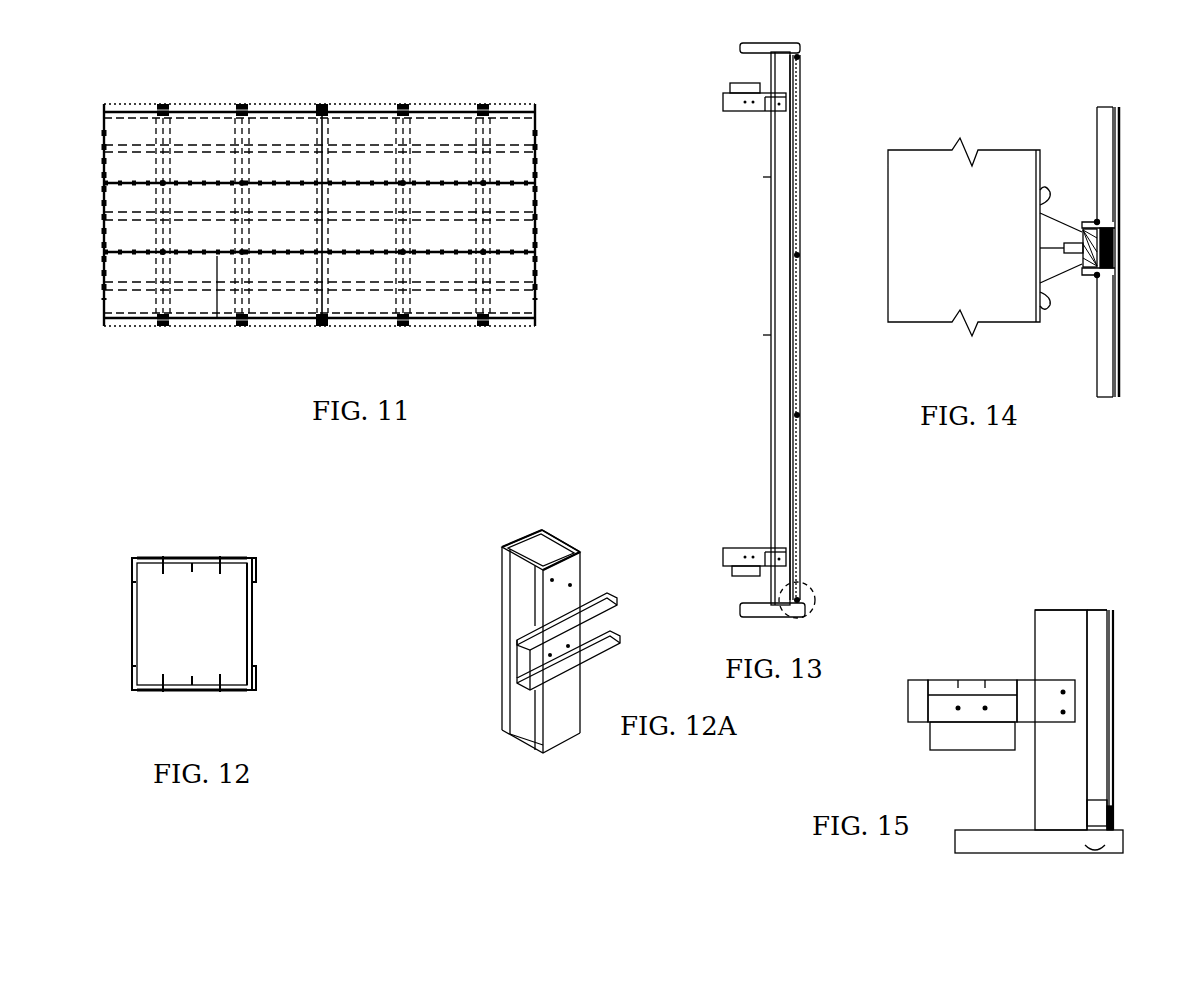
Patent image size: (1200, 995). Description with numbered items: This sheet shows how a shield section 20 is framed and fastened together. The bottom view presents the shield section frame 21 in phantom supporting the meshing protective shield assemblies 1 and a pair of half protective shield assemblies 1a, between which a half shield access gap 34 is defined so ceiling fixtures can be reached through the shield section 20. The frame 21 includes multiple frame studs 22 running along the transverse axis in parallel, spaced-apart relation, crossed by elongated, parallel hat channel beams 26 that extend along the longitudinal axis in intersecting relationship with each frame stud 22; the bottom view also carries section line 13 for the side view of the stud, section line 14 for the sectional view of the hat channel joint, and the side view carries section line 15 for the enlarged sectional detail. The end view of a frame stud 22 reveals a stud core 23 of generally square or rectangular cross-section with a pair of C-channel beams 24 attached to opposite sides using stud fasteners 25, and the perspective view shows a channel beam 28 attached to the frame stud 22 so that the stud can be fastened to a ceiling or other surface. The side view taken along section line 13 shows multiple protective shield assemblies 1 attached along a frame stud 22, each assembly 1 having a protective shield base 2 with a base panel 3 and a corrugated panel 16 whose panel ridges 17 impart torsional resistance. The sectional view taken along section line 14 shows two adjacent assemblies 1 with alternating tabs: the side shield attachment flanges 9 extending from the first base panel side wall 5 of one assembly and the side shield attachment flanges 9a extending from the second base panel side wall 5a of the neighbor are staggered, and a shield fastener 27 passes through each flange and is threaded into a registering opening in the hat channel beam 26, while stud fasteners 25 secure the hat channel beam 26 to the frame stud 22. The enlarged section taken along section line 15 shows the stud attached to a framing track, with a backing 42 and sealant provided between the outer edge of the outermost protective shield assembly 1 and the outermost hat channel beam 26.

In FIG. 11, the protective shield assembly 1 is at (100, 158).
In FIG. 13, the protective shield assembly 1 is at (811, 130).
In FIG. 14, the protective shield assembly 1 is at (1090, 120).
In FIG. 15, the protective shield assembly 1 is at (1090, 604).
In FIG. 11, the half protective shield assembly 1a is at (263, 328).
In FIG. 13, the protective shield base 2 is at (800, 173).
In FIG. 14, the protective shield base 2 is at (1105, 110).
In FIG. 15, the protective shield base 2 is at (1106, 620).
In FIG. 13, the base panel 3 is at (800, 112).
In FIG. 14, the base panel 3 is at (1112, 110).
In FIG. 15, the base panel 3 is at (1113, 615).
In FIG. 14, the first base panel side wall 5 is at (1098, 270).
In FIG. 14, the second base panel side wall 5a is at (1103, 228).
In FIG. 14, the side shield attachment flange 9 is at (1088, 275).
In FIG. 14, the side shield attachment flange 9a is at (1082, 226).
In FIG. 11, the section line 13 is at (398, 76).
In FIG. 11, the section line 14 is at (281, 155).
In FIG. 13, the section line 15 is at (805, 618).
In FIG. 14, the corrugated panel 16 is at (1093, 143).
In FIG. 15, the corrugated panel 16 is at (1080, 625).
In FIG. 14, the panel ridge 17 is at (1100, 130).
In FIG. 15, the panel ridge 17 is at (1100, 648).
In FIG. 11, the shield section 20 is at (156, 82).
In FIG. 11, the shield section frame 21 is at (544, 136).
In FIG. 13, the shield section frame 21 is at (760, 228).
In FIG. 15, the shield section frame 21 is at (1035, 603).
In FIG. 11, the frame stud 22 is at (410, 100).
In FIG. 12, the frame stud 22 is at (258, 603).
In FIG. 12A, the frame stud 22 is at (500, 612).
In FIG. 13, the frame stud 22 is at (769, 255).
In FIG. 14, the frame stud 22 is at (920, 146).
In FIG. 15, the frame stud 22 is at (1033, 640).
In FIG. 12, the stud core 23 is at (253, 645).
In FIG. 12A, the stud core 23 is at (556, 546).
In FIG. 12, the C-channel beam 24 is at (242, 556).
In FIG. 12A, the C-channel beam 24 is at (522, 545).
In FIG. 12, the stud fastener 25 is at (220, 558).
In FIG. 12A, the stud fastener 25 is at (553, 580).
In FIG. 14, the stud fastener 25 is at (1047, 183).
In FIG. 11, the hat channel beam 26 is at (225, 210).
In FIG. 13, the hat channel beam 26 is at (800, 55).
In FIG. 14, the hat channel beam 26 is at (1095, 275).
In FIG. 15, the hat channel beam 26 is at (1107, 805).
In FIG. 14, the shield fastener 27 is at (1062, 248).
In FIG. 13, the channel beam 28 is at (770, 175).
In FIG. 15, the channel beam 28 is at (991, 715).
In FIG. 11, the half shield access gap 34 is at (217, 256).
In FIG. 15, the backing 42 is at (1088, 800).